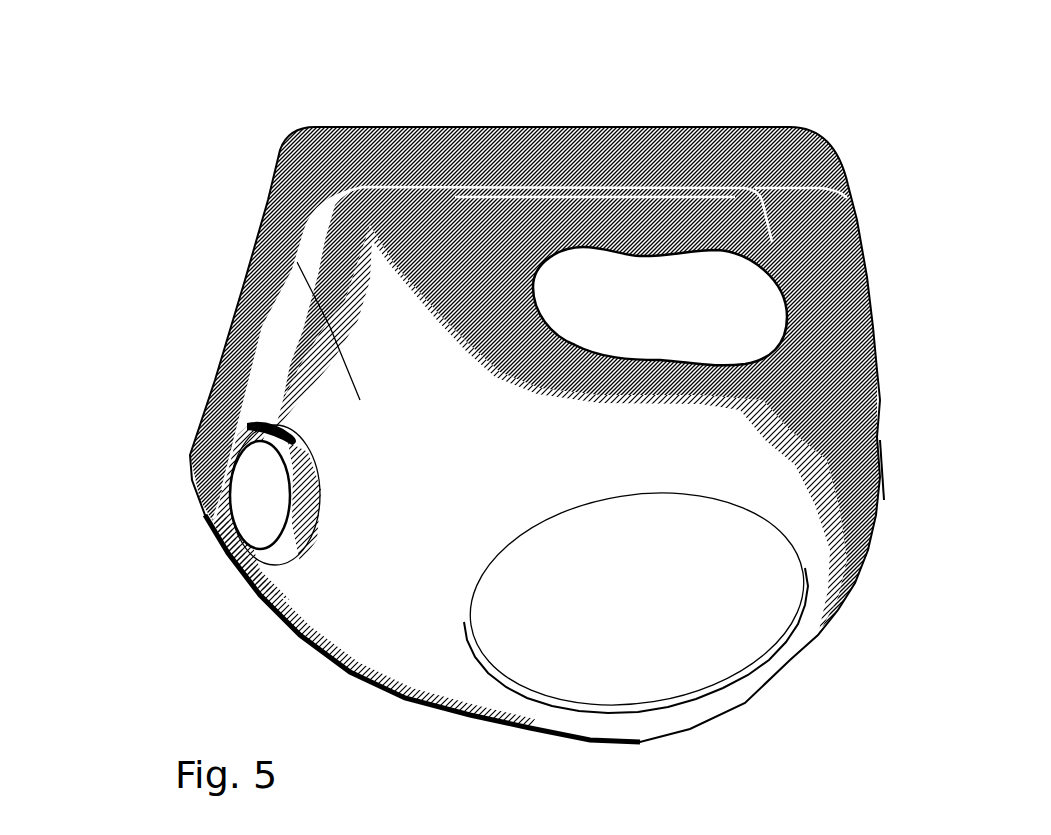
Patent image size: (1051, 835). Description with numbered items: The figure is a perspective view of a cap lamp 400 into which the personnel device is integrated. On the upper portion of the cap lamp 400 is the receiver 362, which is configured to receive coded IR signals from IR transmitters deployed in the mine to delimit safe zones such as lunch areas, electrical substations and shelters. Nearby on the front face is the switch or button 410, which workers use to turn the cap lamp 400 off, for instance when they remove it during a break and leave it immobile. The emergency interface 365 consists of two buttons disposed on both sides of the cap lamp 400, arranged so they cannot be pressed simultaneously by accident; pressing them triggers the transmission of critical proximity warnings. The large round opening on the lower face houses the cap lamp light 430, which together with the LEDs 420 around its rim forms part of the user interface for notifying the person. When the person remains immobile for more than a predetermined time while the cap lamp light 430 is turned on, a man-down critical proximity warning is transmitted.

The cap lamp 400 is at (186, 127).
The receiver 362 is at (730, 206).
The switch or button 410 is at (731, 304).
The emergency interface 365 is at (897, 478).
The LED 420 is at (486, 630).
The cap lamp light 430 is at (636, 549).